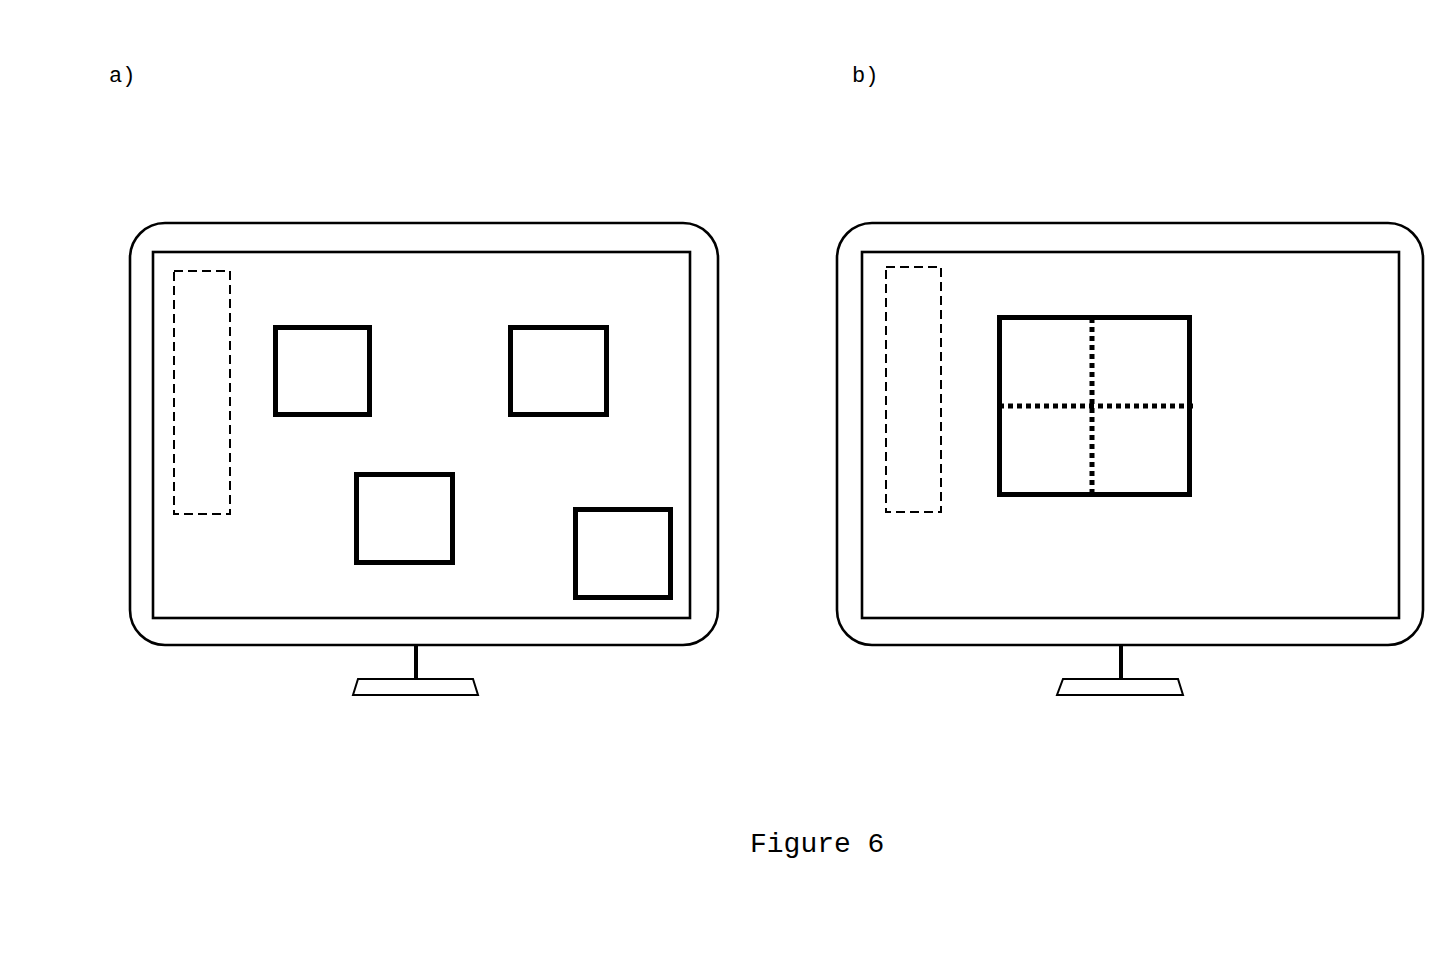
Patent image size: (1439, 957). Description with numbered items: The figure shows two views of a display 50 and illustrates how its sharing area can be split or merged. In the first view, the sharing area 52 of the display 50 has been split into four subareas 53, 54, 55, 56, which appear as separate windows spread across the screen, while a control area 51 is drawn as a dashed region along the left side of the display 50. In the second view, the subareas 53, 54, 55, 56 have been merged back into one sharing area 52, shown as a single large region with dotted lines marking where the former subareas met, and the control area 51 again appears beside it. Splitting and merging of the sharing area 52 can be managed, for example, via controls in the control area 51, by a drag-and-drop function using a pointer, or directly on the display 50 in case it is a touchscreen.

The display 50 is at (186, 222).
The control area 51 is at (196, 519).
The sharing area 52 is at (1030, 313).
The subarea 53 is at (328, 322).
The subarea 54 is at (375, 471).
The subarea 55 is at (527, 324).
The subarea 56 is at (592, 506).